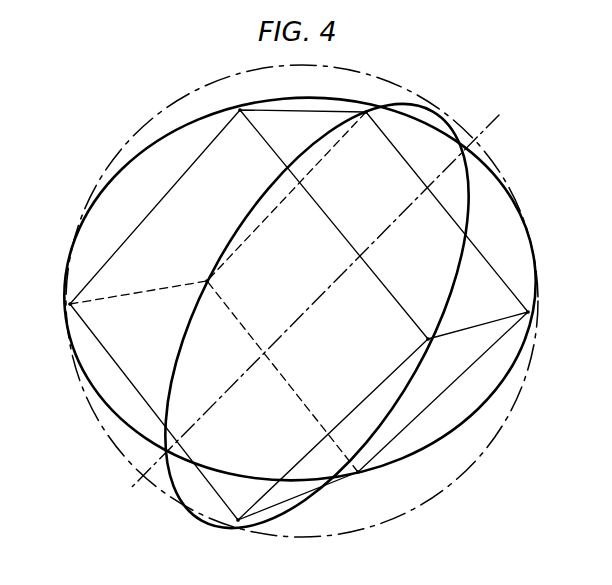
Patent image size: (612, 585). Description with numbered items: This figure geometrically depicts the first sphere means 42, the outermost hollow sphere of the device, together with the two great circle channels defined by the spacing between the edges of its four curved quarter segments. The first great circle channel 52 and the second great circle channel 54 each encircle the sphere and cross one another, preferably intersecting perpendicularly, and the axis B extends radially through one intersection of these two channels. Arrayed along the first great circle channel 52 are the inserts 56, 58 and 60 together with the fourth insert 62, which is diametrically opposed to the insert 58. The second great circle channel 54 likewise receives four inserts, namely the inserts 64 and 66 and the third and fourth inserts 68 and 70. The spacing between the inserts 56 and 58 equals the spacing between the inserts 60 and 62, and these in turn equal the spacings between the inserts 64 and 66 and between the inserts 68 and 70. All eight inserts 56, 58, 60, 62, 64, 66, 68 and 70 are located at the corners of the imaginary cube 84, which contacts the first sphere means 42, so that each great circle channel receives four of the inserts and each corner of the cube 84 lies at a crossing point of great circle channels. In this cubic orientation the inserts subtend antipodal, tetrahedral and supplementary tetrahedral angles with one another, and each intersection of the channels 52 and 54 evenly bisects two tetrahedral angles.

The first sphere means 42 is at (145, 128).
The first great circle channel 52 is at (484, 170).
The second great circle channel 54 is at (439, 113).
The axis B is at (493, 123).
The insert 56 is at (69, 304).
The insert 58 is at (240, 110).
The third insert 60 is at (530, 312).
The fourth insert 62 is at (358, 476).
The insert 64 is at (239, 522).
The insert 66 is at (430, 342).
The third insert 68 is at (366, 112).
The fourth insert 70 is at (207, 281).
The imaginary cube 84 is at (199, 160).